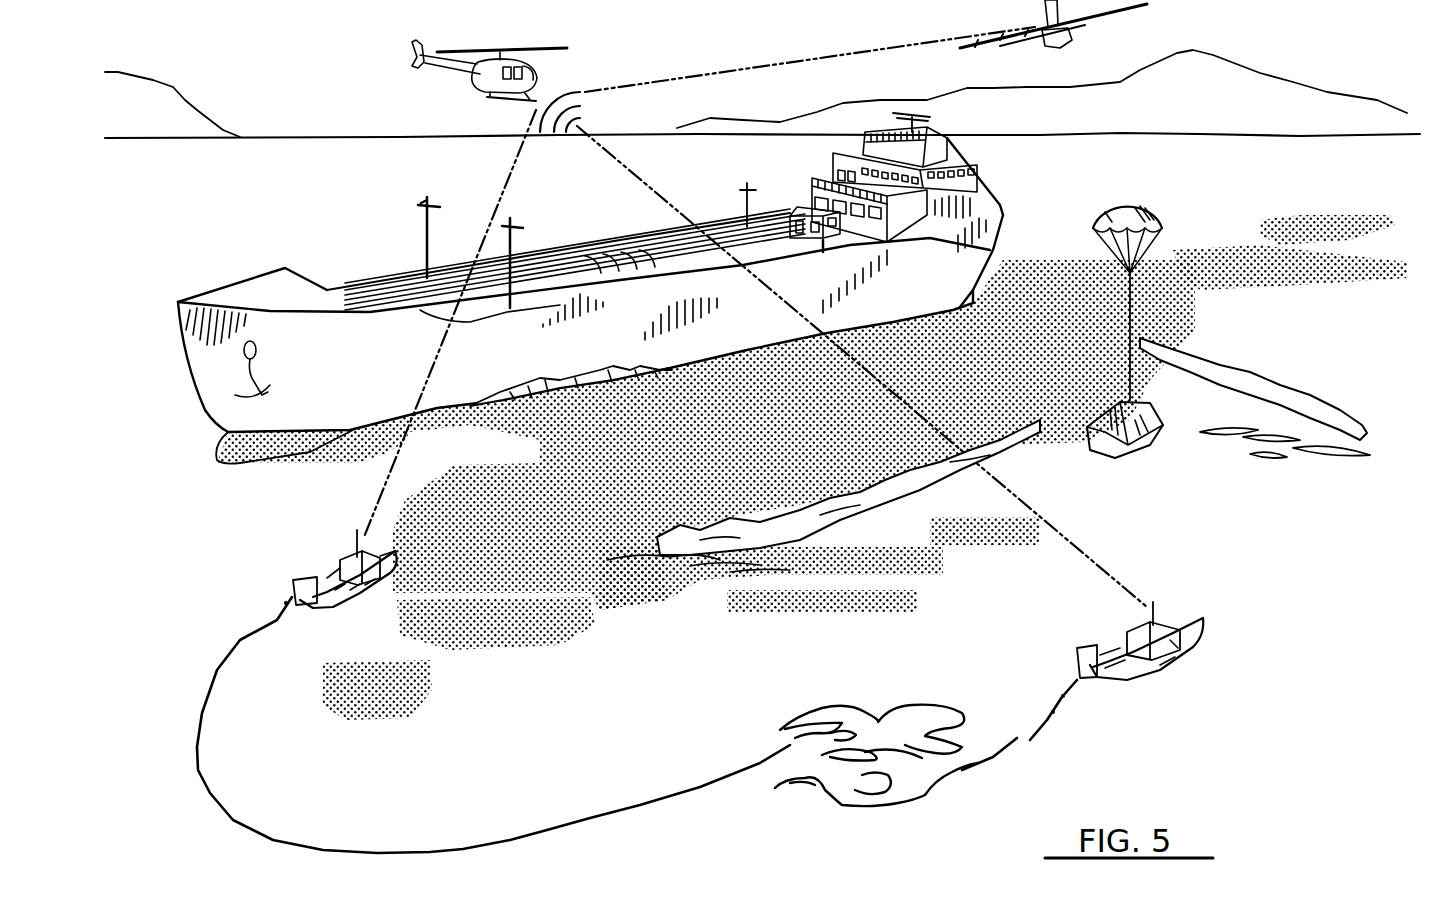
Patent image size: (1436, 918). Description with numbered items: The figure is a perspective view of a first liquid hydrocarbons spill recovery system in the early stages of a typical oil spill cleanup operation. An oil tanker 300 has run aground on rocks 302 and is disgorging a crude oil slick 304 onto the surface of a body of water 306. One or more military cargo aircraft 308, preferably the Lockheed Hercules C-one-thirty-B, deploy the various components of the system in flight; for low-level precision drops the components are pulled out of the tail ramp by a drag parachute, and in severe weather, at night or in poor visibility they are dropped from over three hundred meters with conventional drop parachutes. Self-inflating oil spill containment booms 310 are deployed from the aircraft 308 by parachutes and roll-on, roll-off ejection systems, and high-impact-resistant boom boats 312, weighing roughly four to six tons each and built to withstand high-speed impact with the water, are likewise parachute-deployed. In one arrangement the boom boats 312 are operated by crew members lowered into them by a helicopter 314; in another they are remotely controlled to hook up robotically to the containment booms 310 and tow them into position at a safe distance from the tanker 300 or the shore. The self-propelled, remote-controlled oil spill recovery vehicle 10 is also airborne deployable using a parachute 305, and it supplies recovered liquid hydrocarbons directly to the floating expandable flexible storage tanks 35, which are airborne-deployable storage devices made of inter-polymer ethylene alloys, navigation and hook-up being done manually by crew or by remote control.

The remote-controlled oil spill recovery vehicle 10 is at (1148, 458).
The liquid hydrocarbons storage device 35 is at (916, 496).
The oil tanker 300 is at (383, 265).
The rocks 302 is at (525, 374).
The crude oil slick 304 is at (550, 487).
The parachute 305 is at (1145, 195).
The body of water 306 is at (252, 546).
The military cargo aircraft 308 is at (1086, 37).
The oil spill containment booms 310 is at (645, 809).
The boom boats 312 is at (355, 606).
The helicopter 314 is at (468, 80).